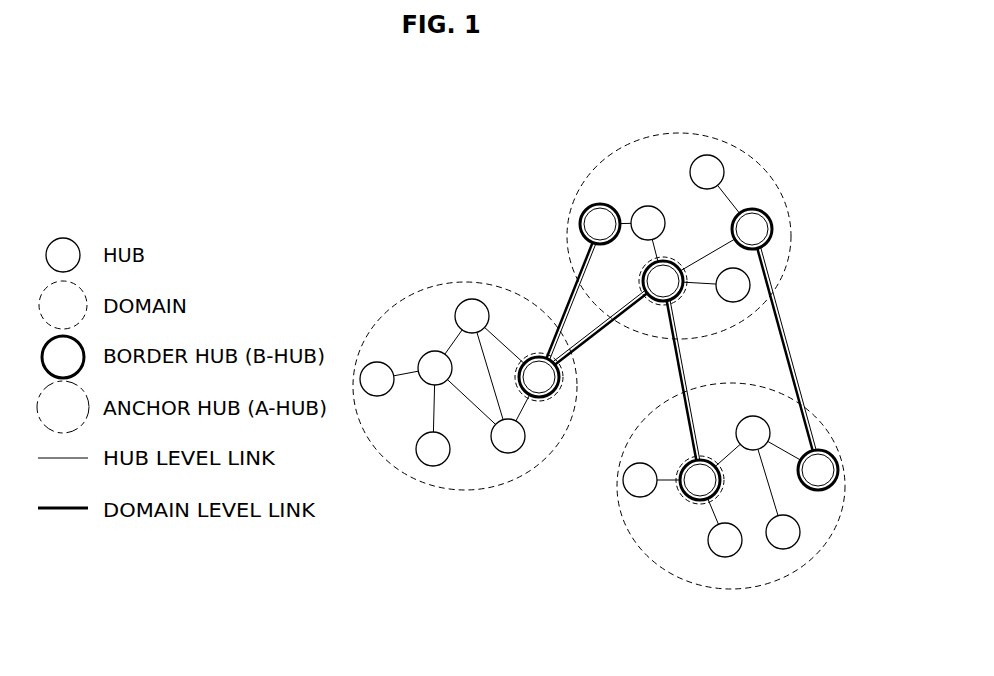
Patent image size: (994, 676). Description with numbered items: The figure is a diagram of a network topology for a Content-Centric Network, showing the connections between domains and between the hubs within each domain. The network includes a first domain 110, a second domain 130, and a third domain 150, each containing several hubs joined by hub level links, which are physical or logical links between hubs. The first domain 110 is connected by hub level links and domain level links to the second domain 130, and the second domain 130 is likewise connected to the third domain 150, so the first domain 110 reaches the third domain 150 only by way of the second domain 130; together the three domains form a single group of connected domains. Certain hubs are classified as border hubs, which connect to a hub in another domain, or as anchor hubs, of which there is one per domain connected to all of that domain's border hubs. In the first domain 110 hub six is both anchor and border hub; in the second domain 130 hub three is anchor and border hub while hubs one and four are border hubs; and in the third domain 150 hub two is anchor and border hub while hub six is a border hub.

The first domain 110 is at (464, 283).
The second domain 130 is at (670, 133).
The third domain 150 is at (728, 588).